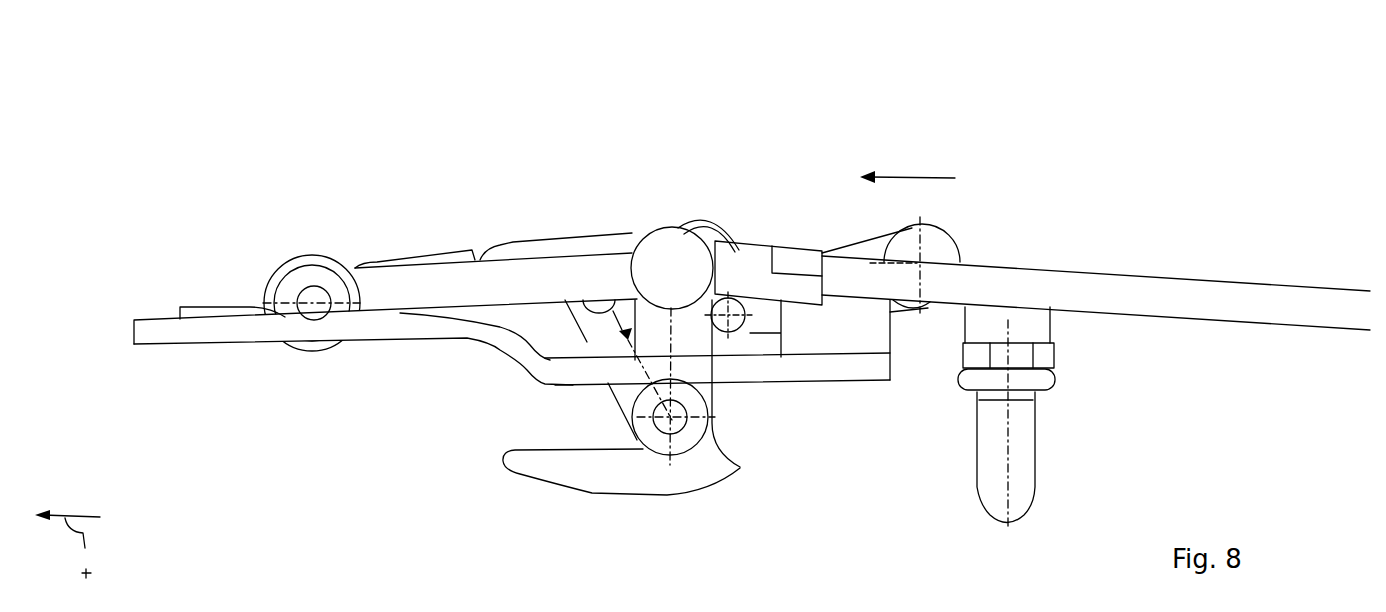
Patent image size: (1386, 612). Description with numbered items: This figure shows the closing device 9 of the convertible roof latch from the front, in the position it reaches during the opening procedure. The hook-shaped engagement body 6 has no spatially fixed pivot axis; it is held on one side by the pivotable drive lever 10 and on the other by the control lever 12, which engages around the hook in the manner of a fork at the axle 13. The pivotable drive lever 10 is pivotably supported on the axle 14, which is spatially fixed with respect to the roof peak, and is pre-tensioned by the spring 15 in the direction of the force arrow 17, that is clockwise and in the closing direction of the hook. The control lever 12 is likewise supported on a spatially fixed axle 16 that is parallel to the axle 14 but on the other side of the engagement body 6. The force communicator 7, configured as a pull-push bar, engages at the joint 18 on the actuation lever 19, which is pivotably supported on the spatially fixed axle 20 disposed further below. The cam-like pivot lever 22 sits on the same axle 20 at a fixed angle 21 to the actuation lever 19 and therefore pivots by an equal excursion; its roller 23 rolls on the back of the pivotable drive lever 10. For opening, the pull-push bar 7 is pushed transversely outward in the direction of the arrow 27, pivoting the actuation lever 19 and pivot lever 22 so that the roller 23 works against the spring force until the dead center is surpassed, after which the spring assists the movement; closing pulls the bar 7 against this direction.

The engagement body 6 is at (592, 473).
The force communicator 7 is at (1138, 285).
The closing device 9 is at (663, 148).
The pivotable drive lever 10 is at (508, 282).
The control lever 12 is at (852, 250).
The axle 13 is at (742, 320).
The axle 14 is at (315, 305).
The spring 15 is at (312, 258).
The axle 16 is at (923, 257).
The force arrow 17 is at (423, 267).
The joint 18 is at (683, 250).
The actuation lever 19 is at (697, 343).
The axle 20 is at (672, 415).
The fixed angle 21 is at (653, 330).
The pivot lever 22 is at (610, 328).
The roller 23 is at (570, 313).
The arrow 27 is at (907, 178).